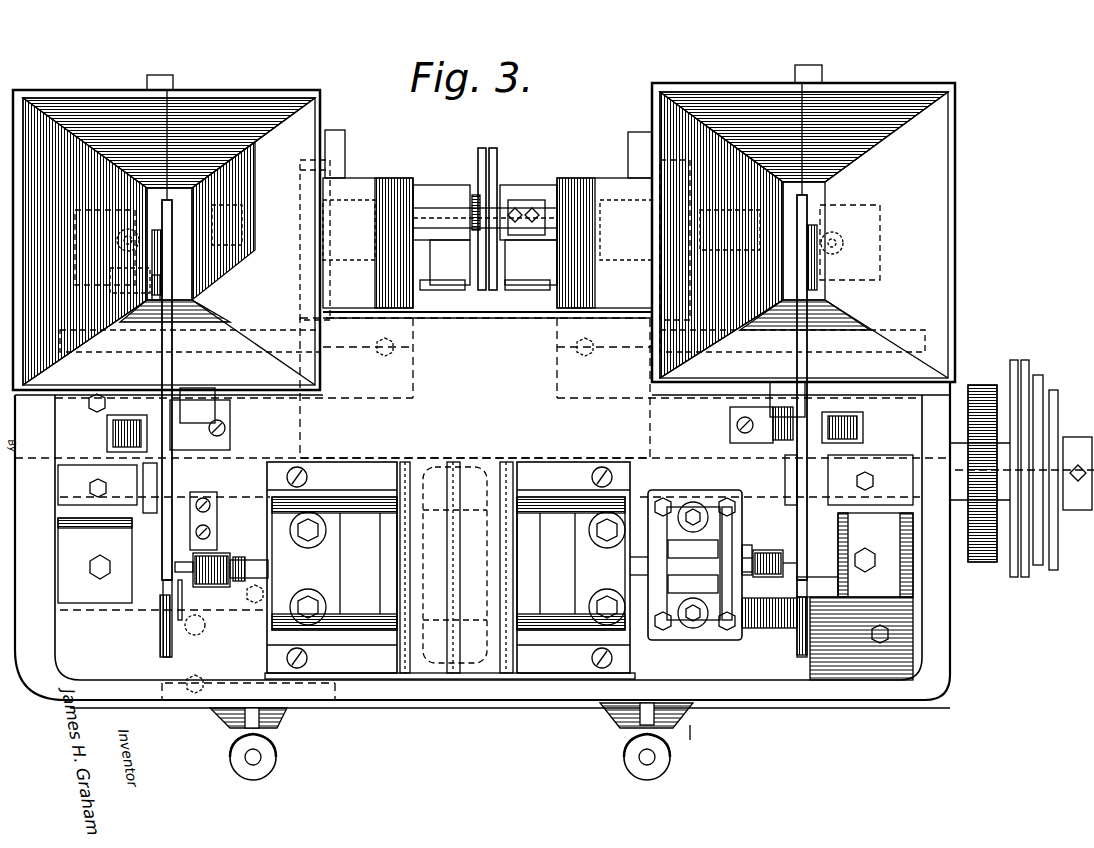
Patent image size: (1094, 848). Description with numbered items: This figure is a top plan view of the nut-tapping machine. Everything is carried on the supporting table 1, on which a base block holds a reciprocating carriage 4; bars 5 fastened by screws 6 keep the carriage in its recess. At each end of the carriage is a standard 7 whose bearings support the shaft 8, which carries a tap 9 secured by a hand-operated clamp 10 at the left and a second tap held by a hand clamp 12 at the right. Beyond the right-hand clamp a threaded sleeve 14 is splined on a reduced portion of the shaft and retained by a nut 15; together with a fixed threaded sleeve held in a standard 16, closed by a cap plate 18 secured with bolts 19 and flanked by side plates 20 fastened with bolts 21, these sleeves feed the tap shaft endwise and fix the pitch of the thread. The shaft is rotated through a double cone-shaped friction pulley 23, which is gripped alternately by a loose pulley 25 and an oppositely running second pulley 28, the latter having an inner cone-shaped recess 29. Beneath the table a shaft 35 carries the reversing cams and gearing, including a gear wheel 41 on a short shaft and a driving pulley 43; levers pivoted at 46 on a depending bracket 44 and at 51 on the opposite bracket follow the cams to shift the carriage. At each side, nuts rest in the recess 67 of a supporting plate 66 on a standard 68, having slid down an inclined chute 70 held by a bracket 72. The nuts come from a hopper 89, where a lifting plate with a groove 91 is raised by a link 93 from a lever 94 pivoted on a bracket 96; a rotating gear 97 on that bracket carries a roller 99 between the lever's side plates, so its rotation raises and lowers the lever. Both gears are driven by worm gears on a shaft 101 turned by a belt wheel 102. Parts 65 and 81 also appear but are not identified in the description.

The supporting table 1 is at (892, 690).
The carriage 4 is at (533, 517).
The bars 5 is at (340, 470).
The screws 6 is at (300, 470).
The standard 7 is at (448, 563).
The shaft 8 is at (253, 557).
The tap 9 is at (200, 625).
The hand-operated clamp 10 is at (210, 592).
The hand clamp 12 is at (768, 580).
The threaded sleeve 14 is at (733, 520).
The nut 15 is at (760, 628).
The standard 16 is at (657, 500).
The cap plate 18 is at (693, 557).
The bolts 19 is at (690, 510).
The plates 20 is at (693, 588).
The bolts 21 is at (760, 540).
The double cone-shaped friction pulley 23 is at (452, 478).
The pulley 25 is at (435, 680).
The second pulley 28 is at (487, 662).
The inner cone-shaped recess 29 is at (861, 567).
The shaft 35 is at (445, 460).
The gear wheel 41 is at (970, 385).
The pulley 43 is at (1030, 375).
The bracket 44 is at (706, 741).
The pivot 46 is at (645, 762).
The pivot 51 is at (250, 760).
The bracket 65 is at (215, 520).
The supporting plate 66 is at (163, 625).
The recess 67 is at (162, 650).
The standard 68 is at (140, 585).
The inclined chute 70 is at (175, 490).
The bracket 72 is at (125, 432).
The bracket 81 is at (200, 390).
The hopper 89 is at (312, 108).
The groove 91 is at (160, 205).
The link 93 is at (117, 243).
The lever 94 is at (555, 275).
The bracket 96 is at (413, 180).
The rotating gear 97 is at (342, 228).
The roller 99 is at (238, 255).
The shaft 101 is at (425, 210).
The belt wheel 102 is at (497, 160).